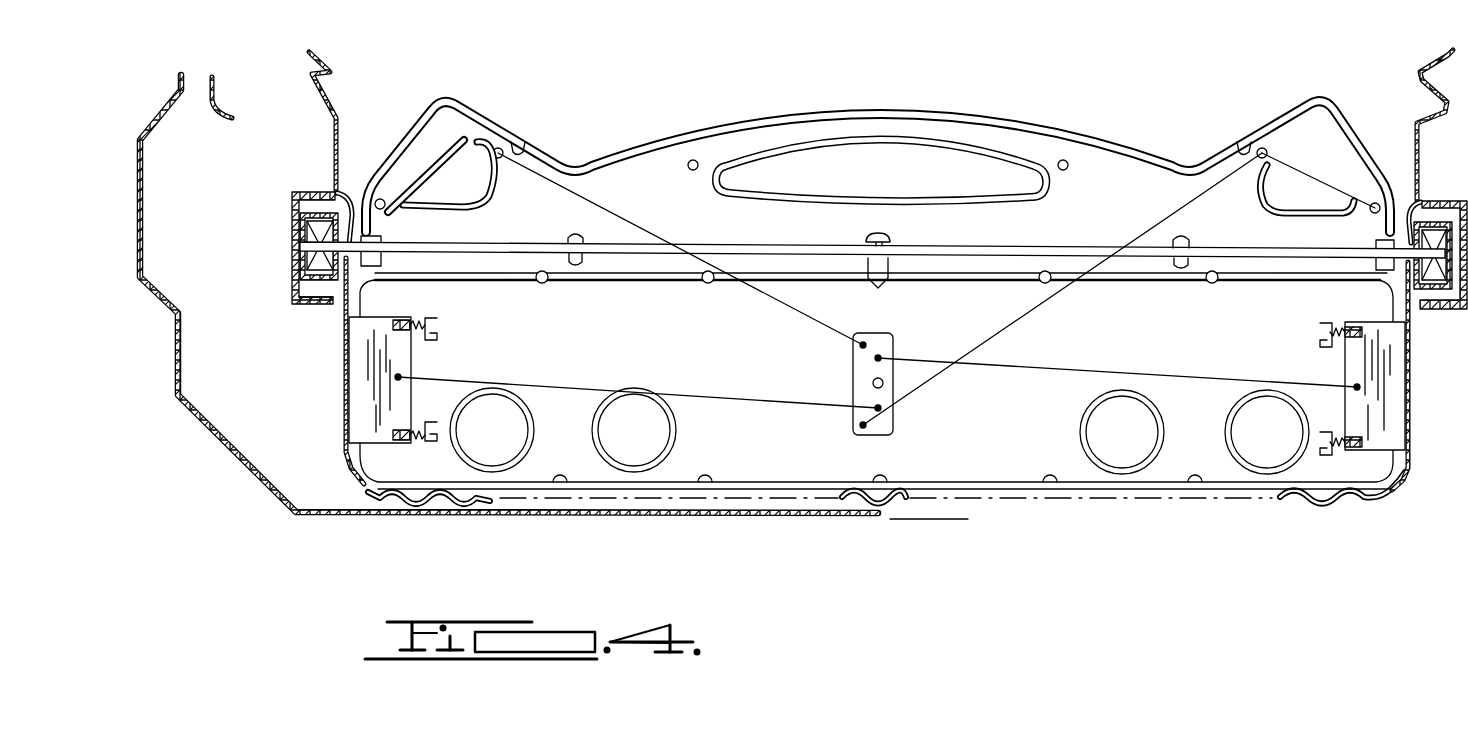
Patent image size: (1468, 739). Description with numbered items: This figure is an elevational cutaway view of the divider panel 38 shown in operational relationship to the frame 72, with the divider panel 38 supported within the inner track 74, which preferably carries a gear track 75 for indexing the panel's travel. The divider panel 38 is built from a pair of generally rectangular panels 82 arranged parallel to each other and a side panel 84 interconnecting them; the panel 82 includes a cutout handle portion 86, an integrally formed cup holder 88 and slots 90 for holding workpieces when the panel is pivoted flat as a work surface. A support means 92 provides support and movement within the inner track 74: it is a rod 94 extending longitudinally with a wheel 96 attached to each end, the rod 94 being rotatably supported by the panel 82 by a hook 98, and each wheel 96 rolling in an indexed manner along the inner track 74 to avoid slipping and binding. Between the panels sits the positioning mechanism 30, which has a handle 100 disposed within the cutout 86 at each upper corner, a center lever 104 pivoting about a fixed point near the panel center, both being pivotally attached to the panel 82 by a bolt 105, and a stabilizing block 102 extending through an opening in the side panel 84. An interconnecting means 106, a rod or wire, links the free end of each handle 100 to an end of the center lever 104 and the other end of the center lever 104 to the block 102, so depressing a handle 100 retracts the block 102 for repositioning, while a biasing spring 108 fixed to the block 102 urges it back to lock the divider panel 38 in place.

The positioning mechanism 30 is at (830, 350).
The divider panel 38 is at (1035, 92).
The frame 72 is at (291, 230).
The inner track 74 is at (313, 298).
The gear track 75 is at (299, 273).
The panel 82 is at (1084, 140).
The side panel 84 is at (355, 188).
The cutout handle portion 86 is at (465, 168).
The cup holder 88 is at (498, 398).
The slot 90 is at (910, 186).
The support means 92 is at (780, 237).
The rod 94 is at (1062, 252).
The wheel 96 is at (317, 217).
The hook 98 is at (571, 235).
The handle 100 is at (437, 143).
The stabilizing block 102 is at (352, 378).
The center lever 104 is at (895, 337).
The bolt 105 is at (404, 216).
The interconnecting means 106 is at (1040, 304).
The biasing spring 108 is at (418, 318).